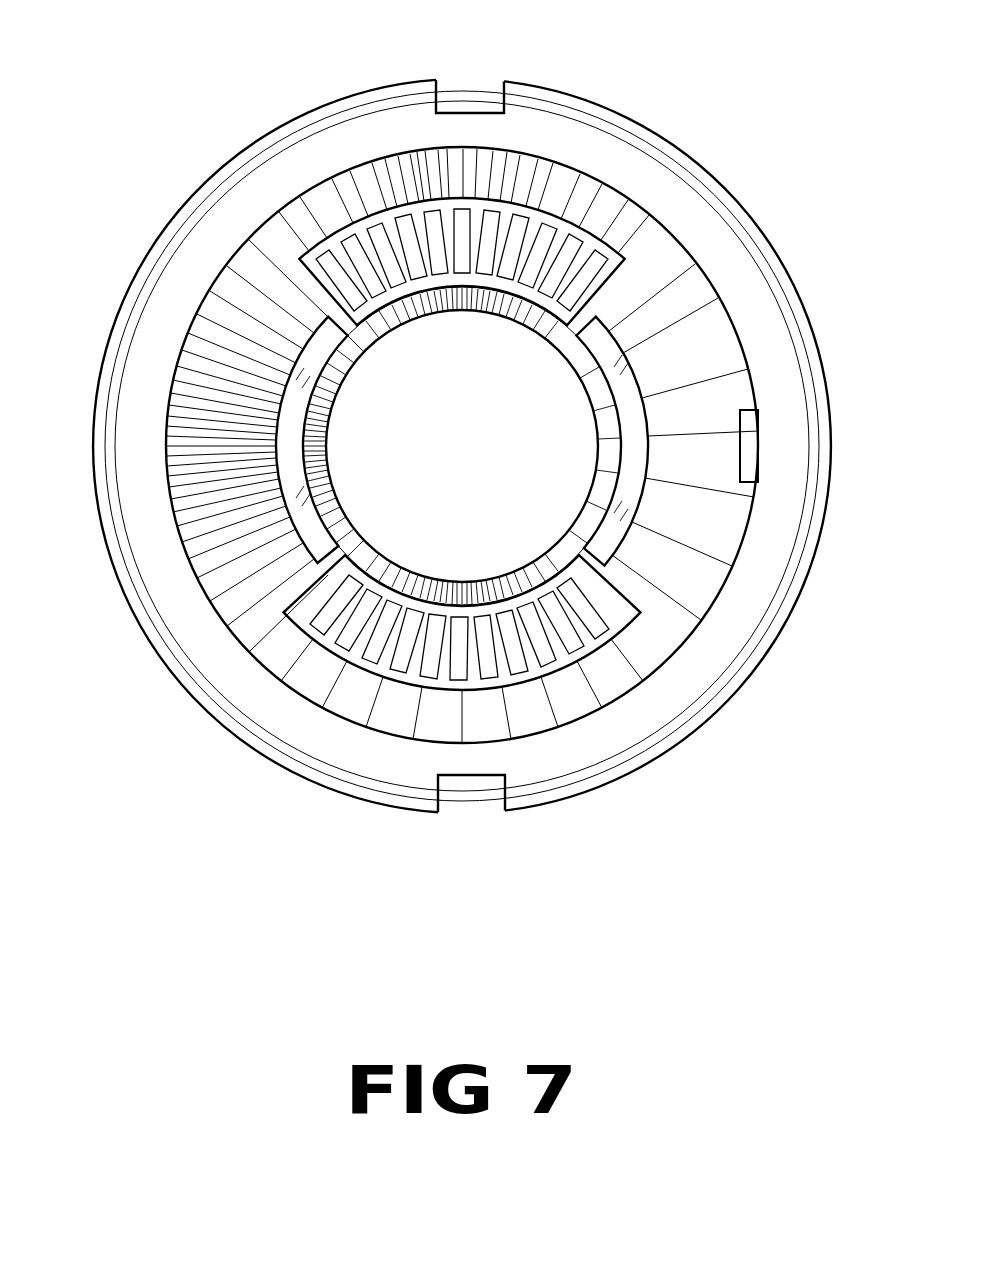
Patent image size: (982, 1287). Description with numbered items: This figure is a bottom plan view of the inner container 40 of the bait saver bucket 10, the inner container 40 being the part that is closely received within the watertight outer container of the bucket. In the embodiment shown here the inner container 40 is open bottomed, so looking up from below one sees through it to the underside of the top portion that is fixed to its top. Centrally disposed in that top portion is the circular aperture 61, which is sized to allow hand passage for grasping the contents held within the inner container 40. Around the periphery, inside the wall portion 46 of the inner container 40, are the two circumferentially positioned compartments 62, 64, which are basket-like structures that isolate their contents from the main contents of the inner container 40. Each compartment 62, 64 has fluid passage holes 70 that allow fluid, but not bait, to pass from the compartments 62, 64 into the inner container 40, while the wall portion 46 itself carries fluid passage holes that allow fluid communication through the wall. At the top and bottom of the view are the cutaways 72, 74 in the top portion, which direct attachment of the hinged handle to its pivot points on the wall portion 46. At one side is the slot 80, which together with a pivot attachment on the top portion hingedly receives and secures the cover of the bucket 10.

The bait saver bucket 10 is at (150, 160).
The inner container 40 is at (103, 353).
The wall portion 46 is at (170, 508).
The circular aperture 61 is at (489, 463).
The compartment 62 is at (512, 210).
The compartment 64 is at (562, 677).
The fluid passage holes 70 is at (523, 230).
The cutaway 72 is at (472, 82).
The cutaway 74 is at (477, 805).
The slot 80 is at (748, 410).